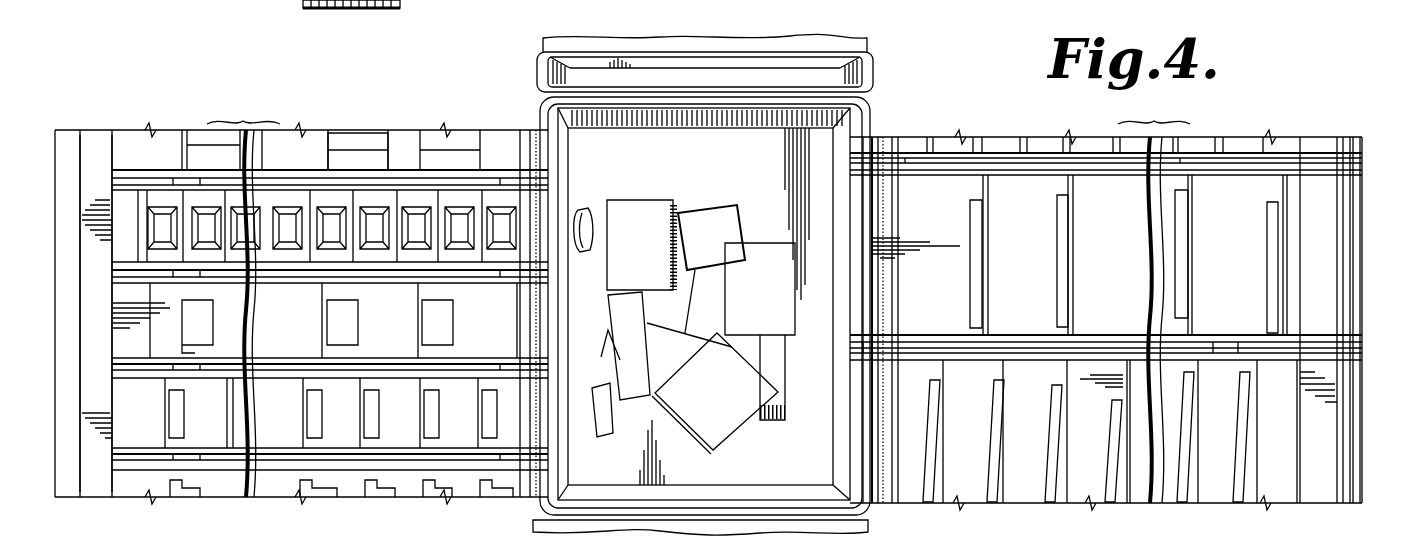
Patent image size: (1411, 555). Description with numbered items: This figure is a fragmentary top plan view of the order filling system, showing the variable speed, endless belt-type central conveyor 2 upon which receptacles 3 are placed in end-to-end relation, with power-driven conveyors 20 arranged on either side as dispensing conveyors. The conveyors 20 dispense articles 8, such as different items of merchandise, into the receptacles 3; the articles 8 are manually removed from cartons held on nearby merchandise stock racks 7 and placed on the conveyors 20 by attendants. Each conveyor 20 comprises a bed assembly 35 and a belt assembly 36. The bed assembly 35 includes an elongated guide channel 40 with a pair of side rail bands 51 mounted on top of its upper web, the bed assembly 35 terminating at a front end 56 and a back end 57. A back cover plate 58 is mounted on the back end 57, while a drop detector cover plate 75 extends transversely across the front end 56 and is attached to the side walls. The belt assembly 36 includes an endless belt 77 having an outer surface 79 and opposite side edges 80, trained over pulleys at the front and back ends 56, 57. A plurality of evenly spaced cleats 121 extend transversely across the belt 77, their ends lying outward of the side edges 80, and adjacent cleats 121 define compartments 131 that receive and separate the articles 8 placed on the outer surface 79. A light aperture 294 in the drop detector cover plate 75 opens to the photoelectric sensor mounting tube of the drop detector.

The central conveyor 2 is at (694, 42).
The receptacles 3 is at (545, 70).
The merchandise stock racks 7 is at (398, 8).
The articles 8 is at (691, 198).
The power-driven conveyor 20 is at (58, 276).
The bed assembly 35 is at (58, 462).
The belt assembly 36 is at (128, 340).
The guide channel 40 is at (152, 378).
The side rail bands 51 is at (297, 352).
The front end 56 is at (562, 165).
The back end 57 is at (40, 350).
The back cover plate 58 is at (62, 222).
The drop detector cover plate 75 is at (850, 434).
The endless belt 77 is at (850, 279).
The outer surface 79 is at (498, 316).
The side edges 80 is at (1017, 153).
The cleats 121 is at (417, 416).
The compartments 131 is at (330, 160).
The light aperture 294 is at (852, 455).